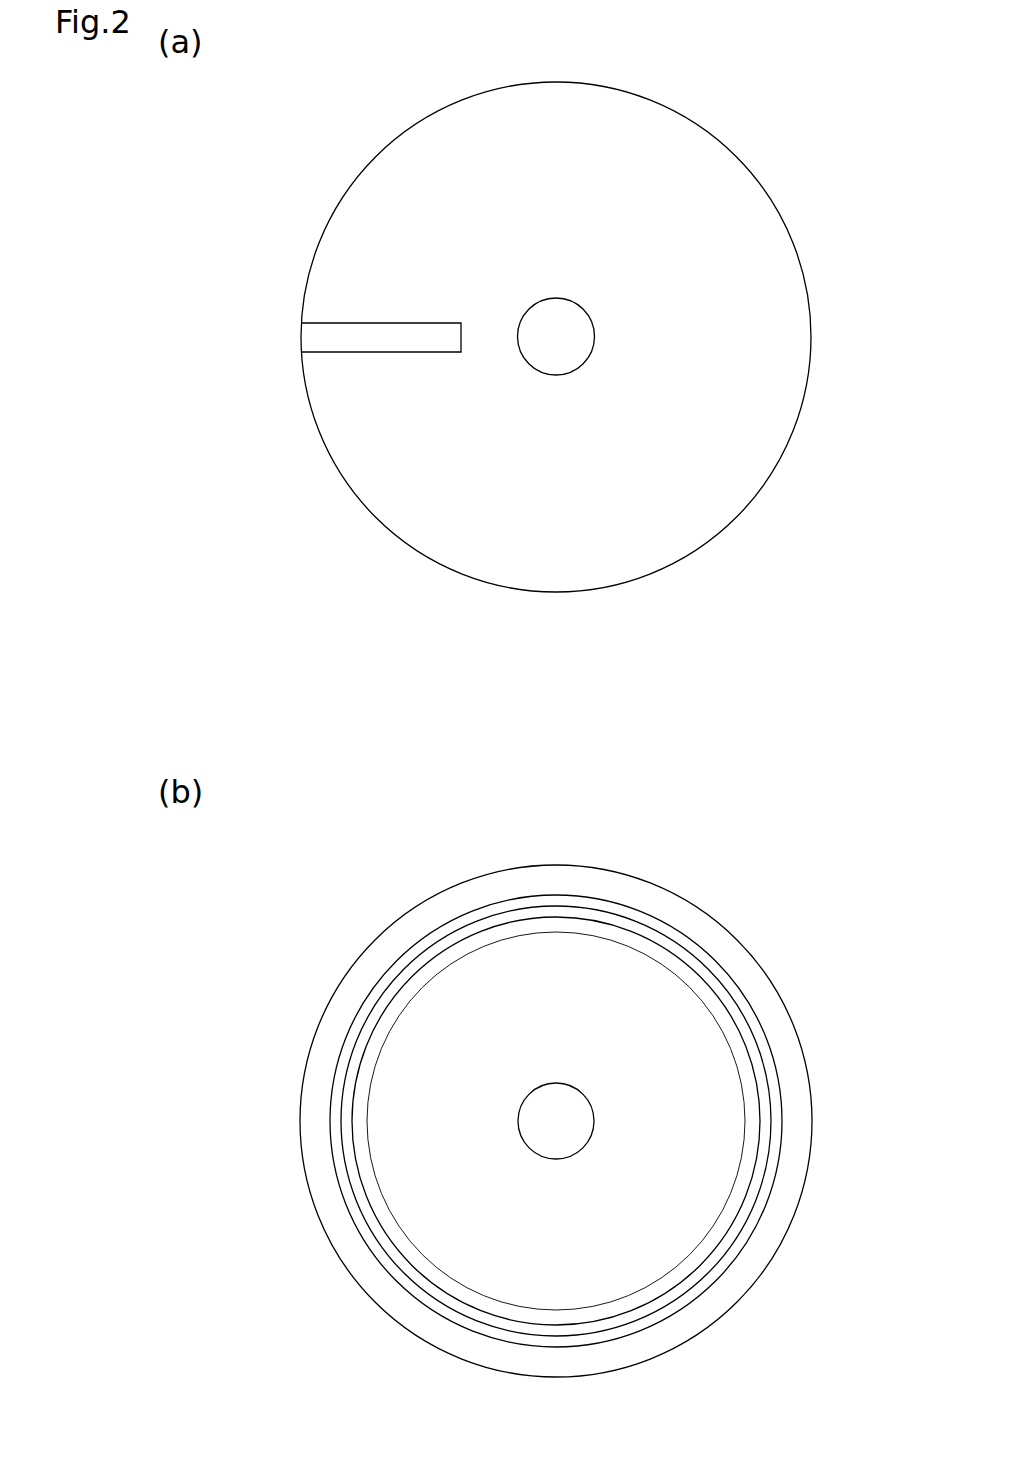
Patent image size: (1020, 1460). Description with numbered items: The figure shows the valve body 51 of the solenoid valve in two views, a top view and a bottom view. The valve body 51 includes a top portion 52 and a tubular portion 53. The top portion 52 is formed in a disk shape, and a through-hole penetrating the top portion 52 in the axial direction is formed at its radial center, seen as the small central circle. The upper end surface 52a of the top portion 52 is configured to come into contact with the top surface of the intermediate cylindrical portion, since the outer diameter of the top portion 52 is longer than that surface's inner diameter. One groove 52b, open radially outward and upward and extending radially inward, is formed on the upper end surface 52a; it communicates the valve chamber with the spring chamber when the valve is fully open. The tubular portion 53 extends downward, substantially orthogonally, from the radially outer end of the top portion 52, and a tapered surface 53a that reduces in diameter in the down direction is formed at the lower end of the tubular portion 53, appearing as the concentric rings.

The valve body 51 is at (783, 98).
The top portion 52 is at (335, 208).
The upper end surface 52a is at (708, 175).
The groove 52b is at (340, 323).
The tubular portion 53 is at (647, 918).
The tapered surface 53a is at (527, 885).